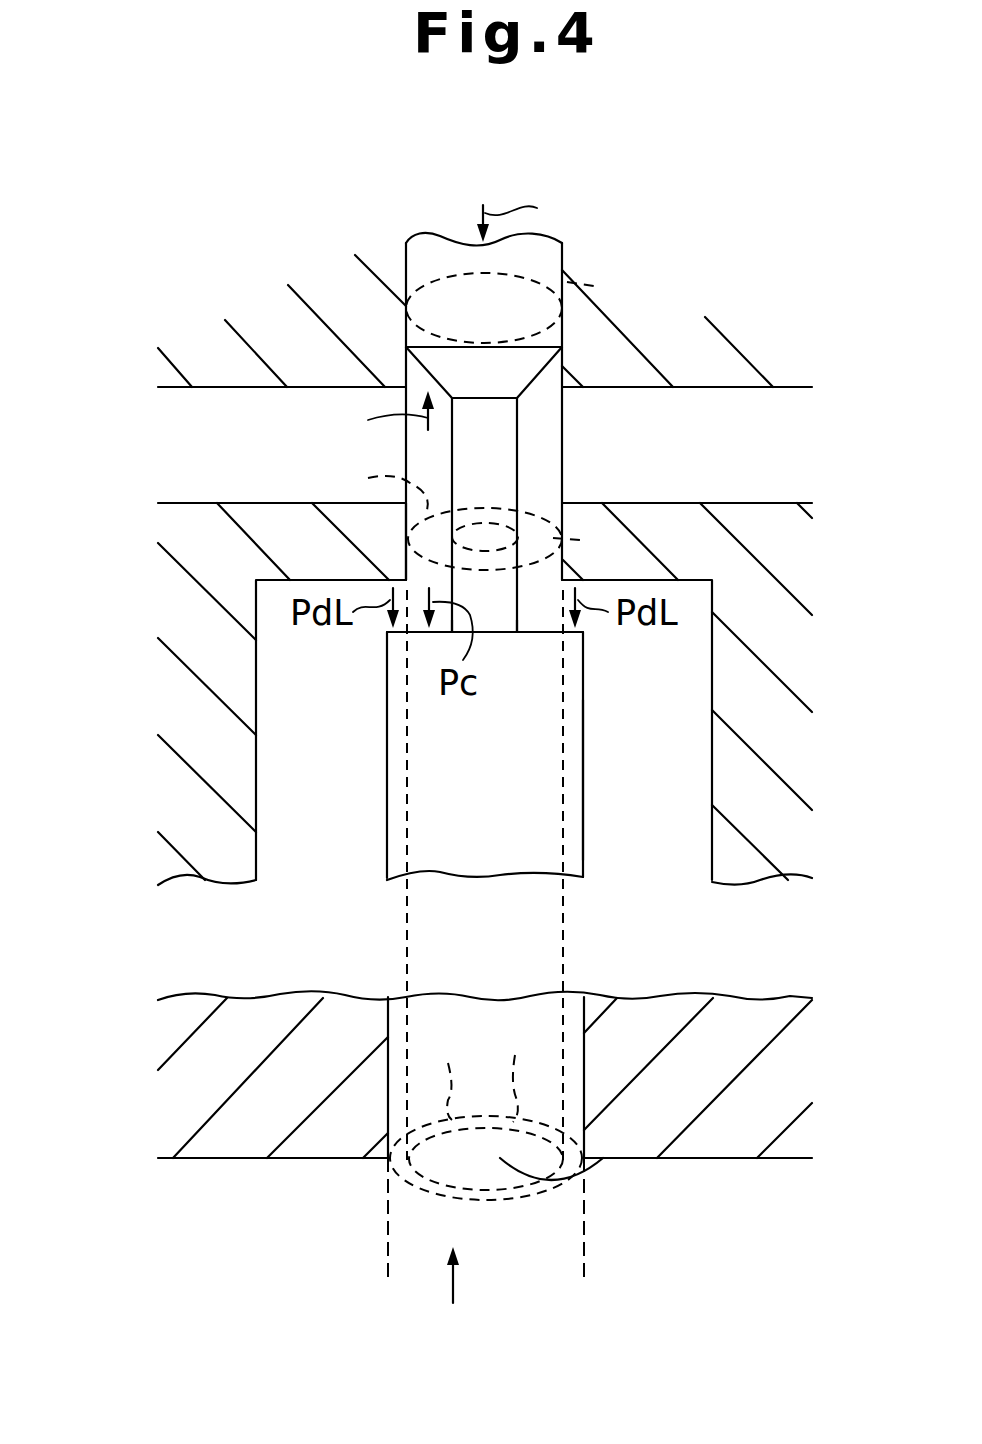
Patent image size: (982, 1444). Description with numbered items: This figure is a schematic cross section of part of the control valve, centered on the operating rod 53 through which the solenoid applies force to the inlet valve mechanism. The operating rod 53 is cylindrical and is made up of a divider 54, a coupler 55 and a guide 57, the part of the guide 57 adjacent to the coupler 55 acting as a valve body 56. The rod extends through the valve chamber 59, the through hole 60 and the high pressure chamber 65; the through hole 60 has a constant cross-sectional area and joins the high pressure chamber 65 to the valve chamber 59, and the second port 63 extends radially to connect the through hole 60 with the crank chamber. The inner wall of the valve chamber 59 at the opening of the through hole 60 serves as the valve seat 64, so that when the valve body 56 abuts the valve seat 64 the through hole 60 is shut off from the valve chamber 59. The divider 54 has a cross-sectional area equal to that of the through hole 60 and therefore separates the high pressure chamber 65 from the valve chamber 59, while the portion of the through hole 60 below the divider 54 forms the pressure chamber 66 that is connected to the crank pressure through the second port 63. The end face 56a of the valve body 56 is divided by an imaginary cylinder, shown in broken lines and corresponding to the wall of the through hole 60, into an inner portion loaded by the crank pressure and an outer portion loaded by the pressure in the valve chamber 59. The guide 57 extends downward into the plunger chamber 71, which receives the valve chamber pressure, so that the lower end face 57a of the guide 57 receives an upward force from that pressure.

The operating rod 53 is at (500, 822).
The divider 54 is at (548, 257).
The coupler 55 is at (497, 432).
The valve body 56 is at (575, 643).
The end face of the valve body 56a is at (538, 614).
The guide 57 is at (397, 1068).
The lower end face of the guide 57a is at (603, 1158).
The valve chamber 59 is at (640, 792).
The through hole 60 is at (556, 503).
The second port 63 is at (195, 503).
The valve seat 64 is at (398, 574).
The high pressure chamber 65 is at (458, 195).
The pressure chamber 66 is at (538, 462).
The plunger chamber 71 is at (668, 1227).